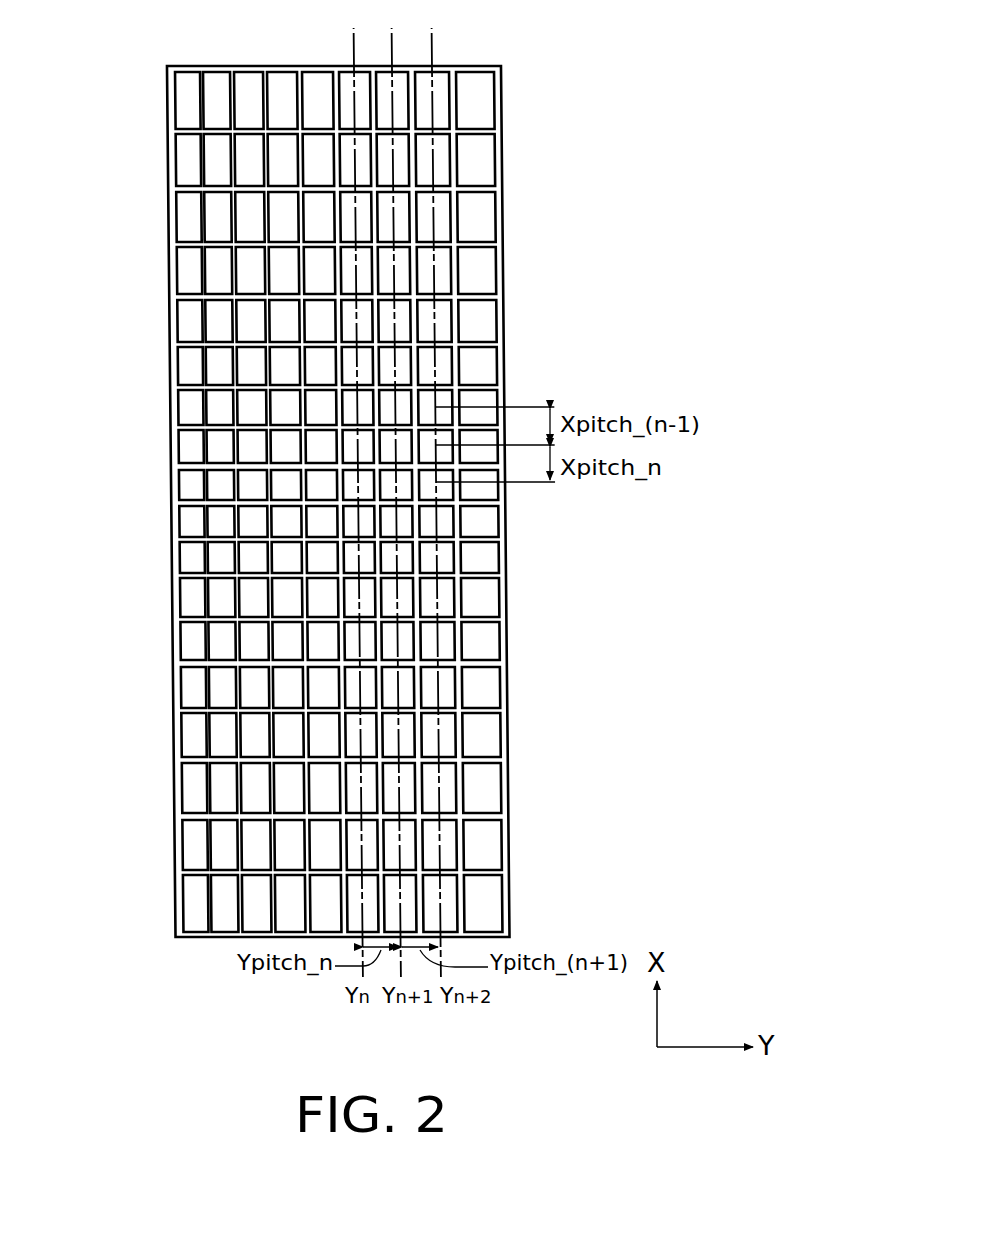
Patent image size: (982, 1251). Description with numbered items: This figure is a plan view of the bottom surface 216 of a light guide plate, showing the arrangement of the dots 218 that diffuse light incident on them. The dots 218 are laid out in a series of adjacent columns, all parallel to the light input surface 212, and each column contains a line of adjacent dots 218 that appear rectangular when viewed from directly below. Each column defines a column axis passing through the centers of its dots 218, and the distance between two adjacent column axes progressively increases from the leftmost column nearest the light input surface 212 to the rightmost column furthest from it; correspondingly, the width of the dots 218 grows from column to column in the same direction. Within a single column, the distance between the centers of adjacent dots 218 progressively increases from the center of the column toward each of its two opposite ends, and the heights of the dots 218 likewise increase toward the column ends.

The light input surface 212 is at (170, 513).
The bottom surface 216 is at (497, 102).
The dots 218 is at (190, 223).